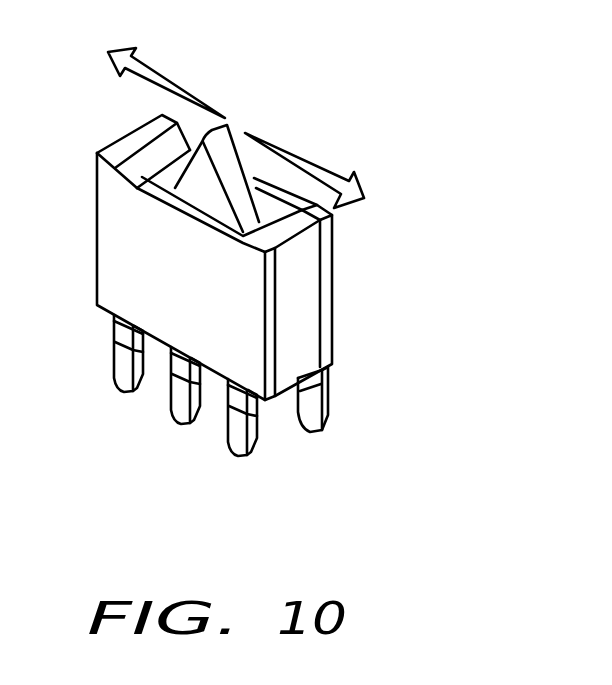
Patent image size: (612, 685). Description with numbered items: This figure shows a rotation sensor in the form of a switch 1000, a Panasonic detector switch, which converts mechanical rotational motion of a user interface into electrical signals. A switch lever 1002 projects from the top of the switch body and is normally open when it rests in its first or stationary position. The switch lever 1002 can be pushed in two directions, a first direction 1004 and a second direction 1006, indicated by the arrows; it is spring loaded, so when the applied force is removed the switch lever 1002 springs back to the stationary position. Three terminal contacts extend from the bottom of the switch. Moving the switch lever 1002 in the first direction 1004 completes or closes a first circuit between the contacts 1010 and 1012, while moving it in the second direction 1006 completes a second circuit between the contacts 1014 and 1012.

The switch 1000 is at (525, 132).
The switch lever 1002 is at (232, 128).
The first direction 1004 is at (311, 162).
The second direction 1006 is at (152, 64).
The contact 1010 is at (118, 393).
The contact 1012 is at (177, 426).
The contact 1014 is at (233, 459).